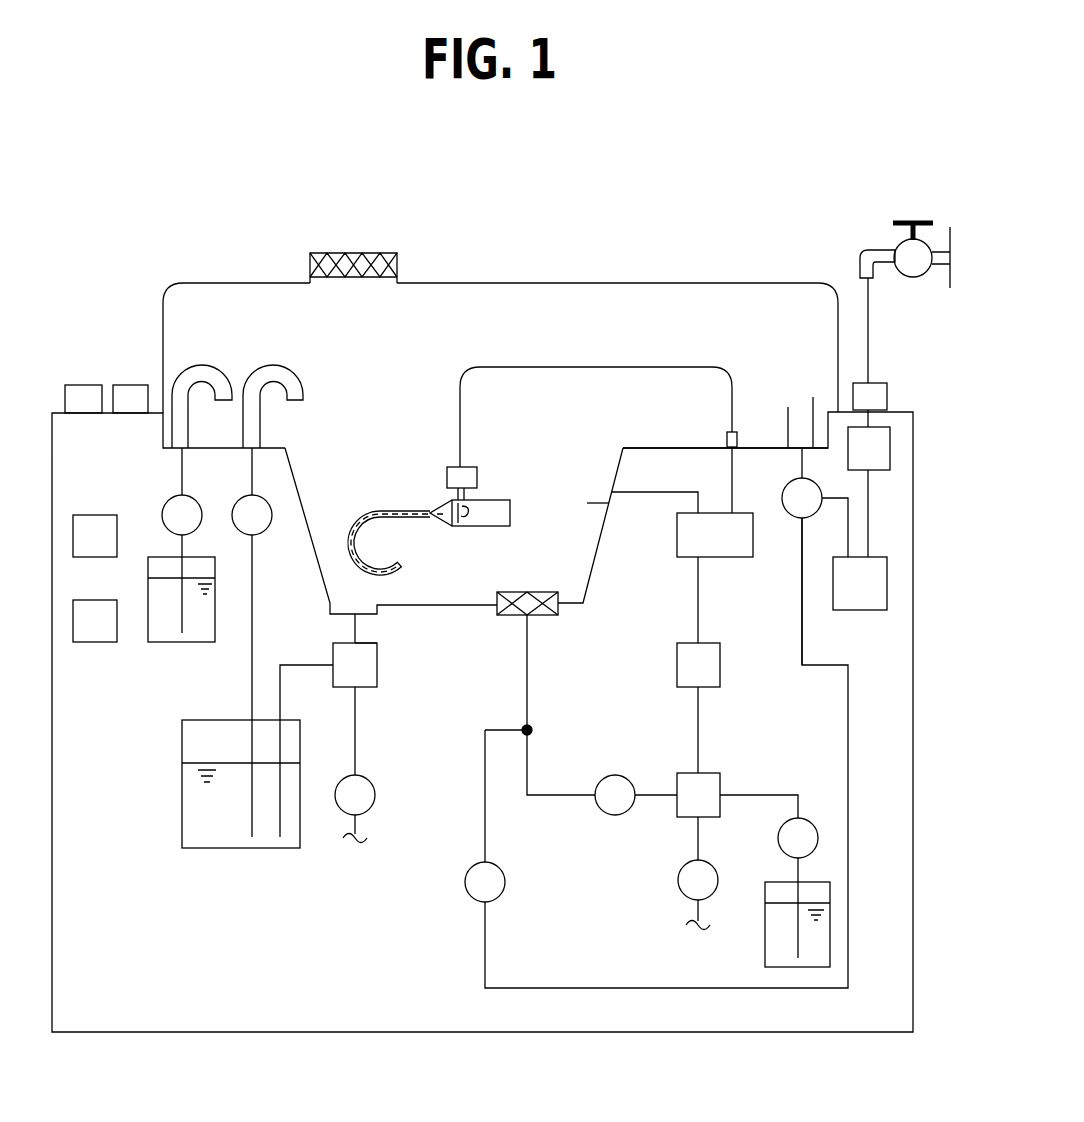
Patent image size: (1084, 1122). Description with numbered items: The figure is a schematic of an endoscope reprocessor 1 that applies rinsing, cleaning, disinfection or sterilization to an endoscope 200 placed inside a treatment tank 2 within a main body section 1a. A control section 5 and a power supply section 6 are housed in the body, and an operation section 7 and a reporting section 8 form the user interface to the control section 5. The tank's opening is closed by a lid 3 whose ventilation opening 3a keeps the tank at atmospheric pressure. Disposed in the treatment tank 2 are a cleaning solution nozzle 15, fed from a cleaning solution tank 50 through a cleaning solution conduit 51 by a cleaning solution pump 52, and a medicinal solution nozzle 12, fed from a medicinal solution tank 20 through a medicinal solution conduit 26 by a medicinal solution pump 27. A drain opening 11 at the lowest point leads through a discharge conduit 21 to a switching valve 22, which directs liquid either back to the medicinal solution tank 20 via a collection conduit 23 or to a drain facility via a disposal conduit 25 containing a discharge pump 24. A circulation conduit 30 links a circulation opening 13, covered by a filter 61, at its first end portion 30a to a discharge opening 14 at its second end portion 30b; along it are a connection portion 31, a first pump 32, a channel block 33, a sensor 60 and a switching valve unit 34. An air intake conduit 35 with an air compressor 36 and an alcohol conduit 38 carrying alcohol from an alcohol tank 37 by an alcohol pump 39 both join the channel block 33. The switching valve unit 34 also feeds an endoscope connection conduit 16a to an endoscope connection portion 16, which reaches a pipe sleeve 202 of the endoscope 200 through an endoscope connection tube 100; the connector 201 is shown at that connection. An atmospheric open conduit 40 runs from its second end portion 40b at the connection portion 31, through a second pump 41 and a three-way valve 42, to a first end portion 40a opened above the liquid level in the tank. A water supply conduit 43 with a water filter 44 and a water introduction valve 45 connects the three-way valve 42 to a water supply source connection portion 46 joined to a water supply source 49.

The endoscope reprocessor 1 is at (130, 257).
The main body section 1a is at (54, 411).
The treatment tank 2 is at (300, 492).
The lid 3 is at (440, 283).
The ventilation opening 3a is at (311, 253).
The control section 5 is at (105, 515).
The power supply section 6 is at (105, 600).
The operation section 7 is at (131, 385).
The reporting section 8 is at (85, 385).
The drain opening 11 is at (353, 612).
The medicinal solution nozzle 12 is at (261, 366).
The circulation opening 13 is at (512, 592).
The discharge opening 14 is at (605, 483).
The cleaning solution nozzle 15 is at (223, 366).
The endoscope connection portion 16 is at (738, 440).
The endoscope connection conduit 16a is at (732, 470).
The medicinal solution tank 20 is at (222, 720).
The discharge conduit 21 is at (353, 632).
The switching valve 22 is at (375, 637).
The collection conduit 23 is at (282, 700).
The discharge pump 24 is at (367, 779).
The disposal conduit 25 is at (358, 723).
The medicinal solution conduit 26 is at (253, 563).
The medicinal solution pump 27 is at (256, 497).
The circulation conduit 30 is at (530, 663).
The first end portion 30a is at (512, 617).
The second end portion 30b is at (614, 487).
The connection portion 31 is at (522, 727).
The first pump 32 is at (608, 812).
The channel block 33 is at (686, 818).
The switching valve unit 34 is at (714, 557).
The air intake conduit 35 is at (700, 843).
The air compressor 36 is at (714, 895).
The alcohol tank 37 is at (815, 882).
The alcohol conduit 38 is at (740, 795).
The alcohol pump 39 is at (808, 822).
The atmospheric open conduit 40 is at (485, 823).
The first end portion 40a is at (813, 400).
The second end portion 40b is at (523, 736).
The second pump 41 is at (491, 896).
The three-way valve 42 is at (788, 485).
The water supply conduit 43 is at (848, 498).
The water filter 44 is at (887, 588).
The water introduction valve 45 is at (890, 448).
The water supply source connection portion 46 is at (880, 383).
The water supply source 49 is at (862, 250).
The cleaning solution tank 50 is at (200, 557).
The cleaning solution conduit 51 is at (182, 470).
The cleaning solution pump 52 is at (190, 497).
The sensor 60 is at (710, 688).
The filter 61 is at (535, 592).
The endoscope connection tube 100 is at (560, 367).
The endoscope 200 is at (512, 500).
The connector 201 is at (447, 497).
The pipe sleeve 202 is at (462, 521).